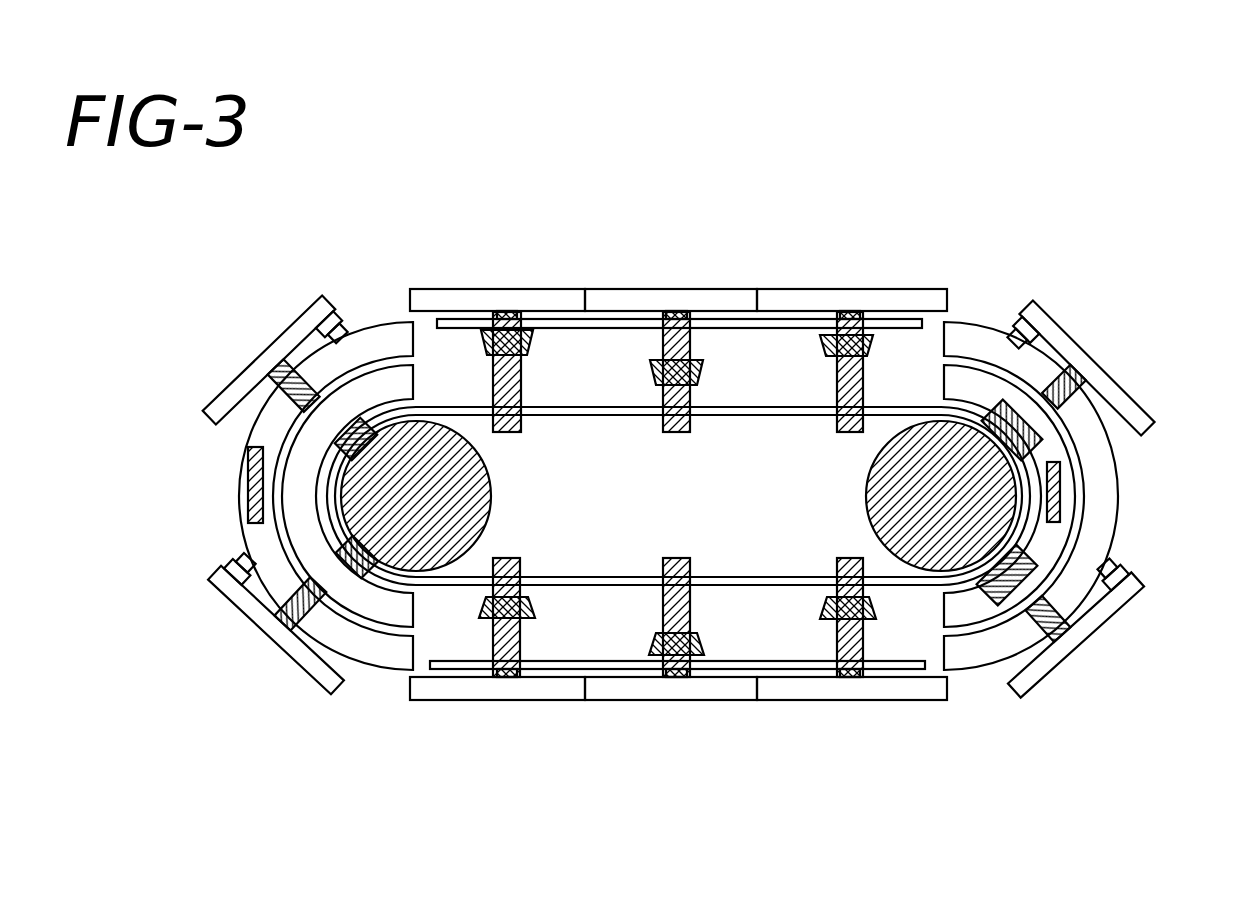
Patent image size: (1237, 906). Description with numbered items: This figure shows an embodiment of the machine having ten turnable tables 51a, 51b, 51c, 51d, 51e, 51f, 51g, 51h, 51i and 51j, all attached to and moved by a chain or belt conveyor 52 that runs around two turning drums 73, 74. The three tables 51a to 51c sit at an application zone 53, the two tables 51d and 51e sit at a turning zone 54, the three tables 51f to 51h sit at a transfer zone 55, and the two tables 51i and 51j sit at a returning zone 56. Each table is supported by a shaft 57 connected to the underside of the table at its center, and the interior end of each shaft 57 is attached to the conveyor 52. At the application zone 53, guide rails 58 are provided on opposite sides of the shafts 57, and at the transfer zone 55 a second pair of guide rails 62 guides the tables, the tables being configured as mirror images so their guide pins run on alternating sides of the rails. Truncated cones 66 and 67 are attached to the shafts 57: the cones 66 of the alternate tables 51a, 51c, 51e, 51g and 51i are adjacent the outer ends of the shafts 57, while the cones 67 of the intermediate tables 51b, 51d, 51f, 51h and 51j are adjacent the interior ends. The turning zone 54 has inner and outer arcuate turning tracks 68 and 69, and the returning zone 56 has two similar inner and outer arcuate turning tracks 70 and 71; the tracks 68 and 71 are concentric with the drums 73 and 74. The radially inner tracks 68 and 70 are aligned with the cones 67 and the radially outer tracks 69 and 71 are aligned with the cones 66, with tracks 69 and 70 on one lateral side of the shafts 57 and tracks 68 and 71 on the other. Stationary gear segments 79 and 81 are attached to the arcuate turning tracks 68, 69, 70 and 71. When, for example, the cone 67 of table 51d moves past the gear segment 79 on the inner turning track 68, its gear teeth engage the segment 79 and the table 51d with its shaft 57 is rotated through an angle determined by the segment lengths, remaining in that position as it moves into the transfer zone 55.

The table 51a is at (878, 289).
The table 51b is at (722, 289).
The table 51c is at (520, 289).
The table 51d is at (300, 325).
The table 51e is at (243, 612).
The table 51f is at (525, 700).
The table 51g is at (705, 700).
The table 51h is at (885, 700).
The table 51i is at (1075, 645).
The table 51j is at (1150, 428).
The conveyor 52 is at (594, 424).
The application zone 53 is at (922, 198).
The turning zone 54 is at (338, 260).
The transfer zone 55 is at (400, 710).
The returning zone 56 is at (1065, 690).
The shaft 57 is at (663, 395).
The guide rails 58 is at (582, 327).
The guide rails 62 is at (566, 660).
The truncated cone 66 is at (492, 348).
The truncated cone 67 is at (1160, 497).
The inner arcuate turning track 68 is at (413, 607).
The outer arcuate turning track 69 is at (413, 641).
The inner arcuate turning track 70 is at (943, 617).
The outer arcuate turning track 71 is at (963, 657).
The turning drum 73 is at (490, 502).
The turning drum 74 is at (880, 458).
The stationary gear segment 79 is at (250, 492).
The stationary gear segment 81 is at (1063, 504).